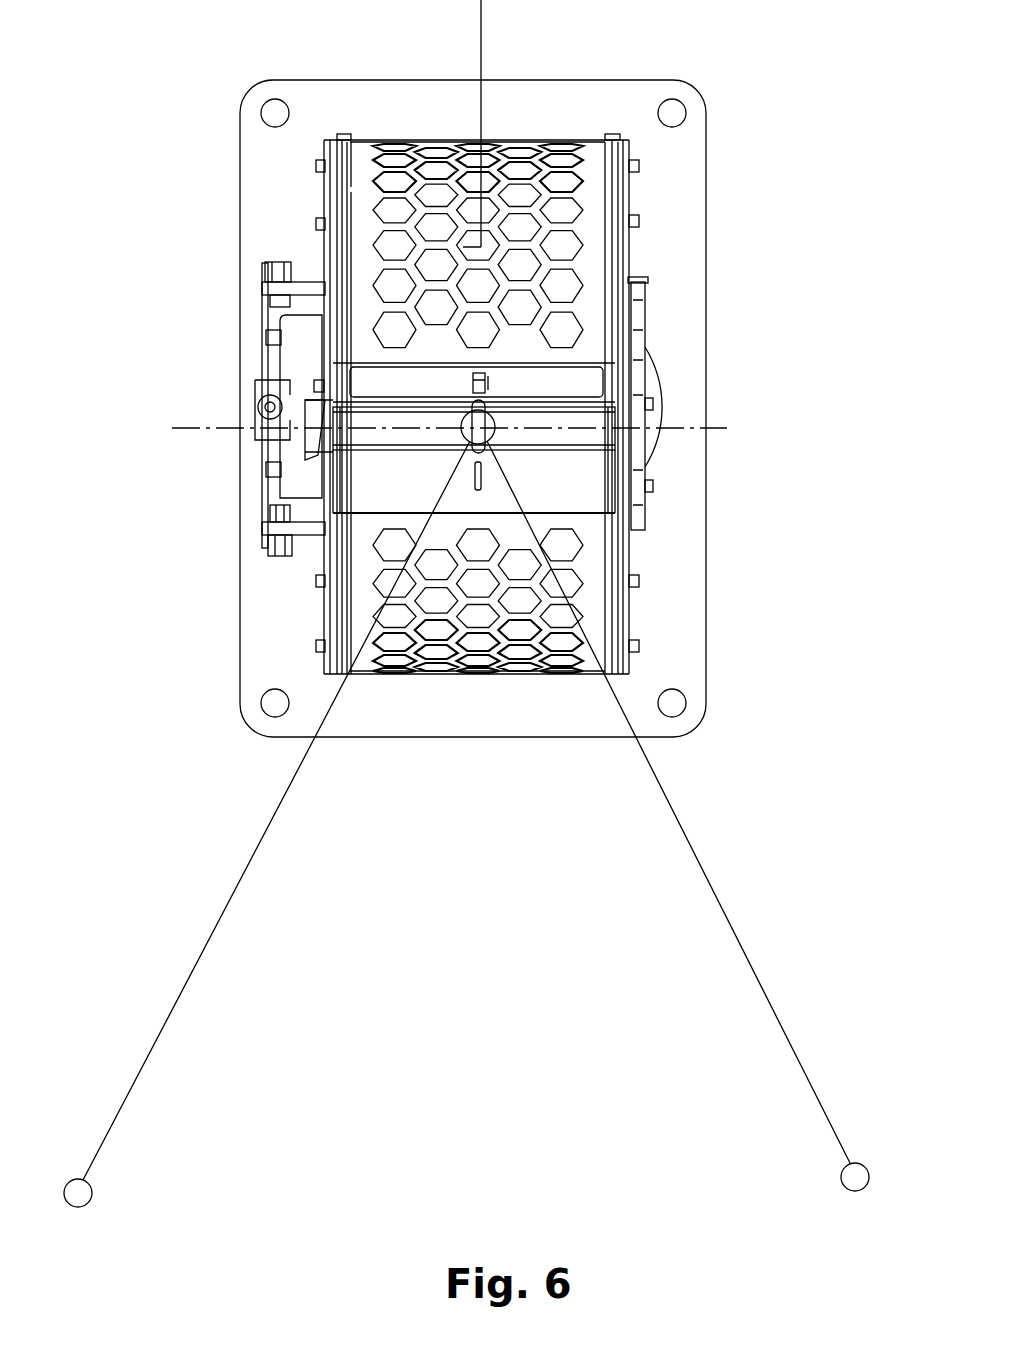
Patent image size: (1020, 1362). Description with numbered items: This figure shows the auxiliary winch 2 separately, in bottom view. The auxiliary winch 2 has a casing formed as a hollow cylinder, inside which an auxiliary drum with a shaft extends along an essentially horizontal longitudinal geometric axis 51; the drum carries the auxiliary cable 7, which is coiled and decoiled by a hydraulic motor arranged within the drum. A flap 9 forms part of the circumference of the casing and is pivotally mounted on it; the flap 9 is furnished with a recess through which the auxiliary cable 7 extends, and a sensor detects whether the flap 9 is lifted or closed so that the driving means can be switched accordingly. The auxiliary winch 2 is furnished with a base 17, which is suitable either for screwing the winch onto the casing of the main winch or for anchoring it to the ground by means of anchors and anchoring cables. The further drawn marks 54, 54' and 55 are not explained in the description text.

The auxiliary winch 2 is at (720, 222).
The auxiliary cable 7 is at (487, 33).
The flap 9 is at (593, 128).
The base 17 is at (688, 638).
The horizontal longitudinal geometric axis 51 is at (720, 428).
The first end position 54 is at (110, 1185).
The second end position 54' is at (814, 1174).
The swivel range lines 55 is at (741, 940).